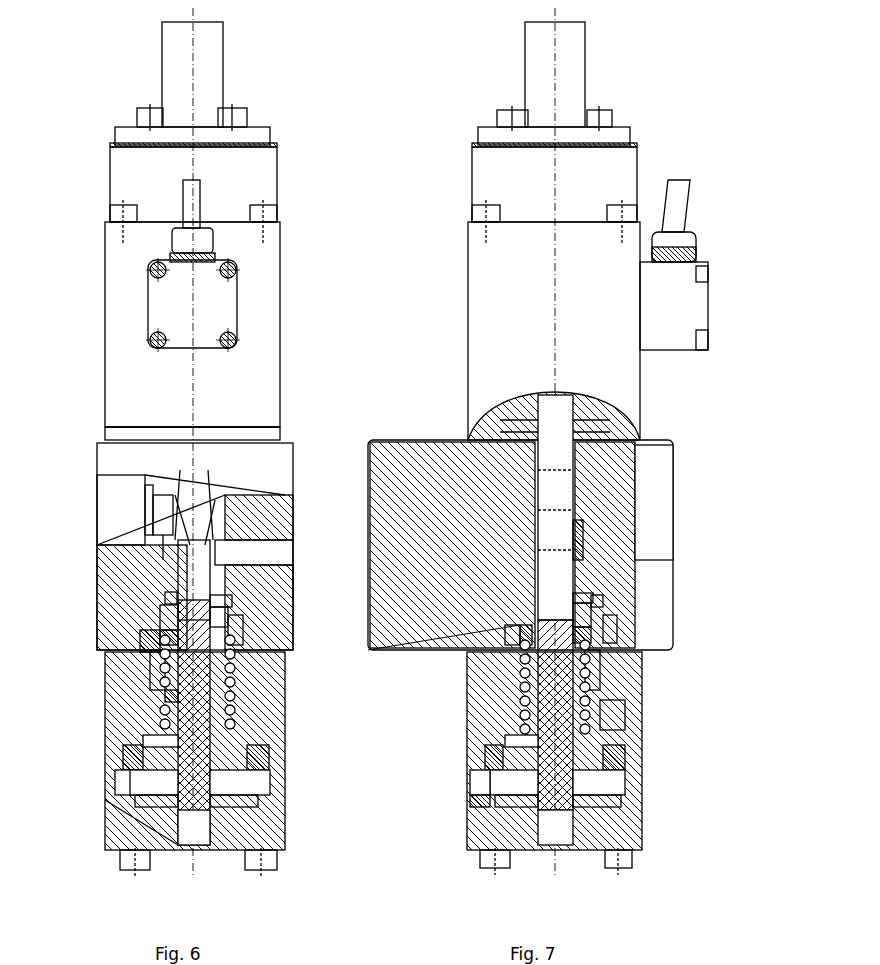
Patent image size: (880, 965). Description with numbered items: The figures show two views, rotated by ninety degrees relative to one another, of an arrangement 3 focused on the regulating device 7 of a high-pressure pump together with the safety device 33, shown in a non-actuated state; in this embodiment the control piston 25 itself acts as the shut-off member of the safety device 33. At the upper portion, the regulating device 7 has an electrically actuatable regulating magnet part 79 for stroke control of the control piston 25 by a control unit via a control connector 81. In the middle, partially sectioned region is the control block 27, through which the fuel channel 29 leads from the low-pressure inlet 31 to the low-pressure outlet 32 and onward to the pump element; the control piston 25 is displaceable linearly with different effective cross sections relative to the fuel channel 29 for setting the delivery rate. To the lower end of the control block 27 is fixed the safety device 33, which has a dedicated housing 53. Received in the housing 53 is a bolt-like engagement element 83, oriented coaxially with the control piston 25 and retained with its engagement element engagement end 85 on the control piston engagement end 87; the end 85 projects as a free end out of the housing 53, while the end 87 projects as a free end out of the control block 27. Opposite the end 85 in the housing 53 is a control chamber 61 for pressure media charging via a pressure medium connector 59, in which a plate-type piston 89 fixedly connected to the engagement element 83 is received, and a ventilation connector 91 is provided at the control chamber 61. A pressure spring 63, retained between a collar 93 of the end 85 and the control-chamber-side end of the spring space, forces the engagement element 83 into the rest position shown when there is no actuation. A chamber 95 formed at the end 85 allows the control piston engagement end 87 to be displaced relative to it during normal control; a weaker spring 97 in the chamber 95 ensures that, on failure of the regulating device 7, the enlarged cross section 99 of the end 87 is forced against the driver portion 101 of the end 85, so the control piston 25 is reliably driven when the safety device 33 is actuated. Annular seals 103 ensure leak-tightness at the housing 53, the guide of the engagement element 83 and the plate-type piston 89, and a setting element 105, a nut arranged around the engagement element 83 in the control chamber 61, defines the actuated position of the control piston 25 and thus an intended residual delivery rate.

In FIG. 6, the arrangement 3 is at (100, 347).
In FIG. 7, the arrangement 3 is at (510, 82).
In FIG. 6, the regulating device 7 is at (125, 462).
In FIG. 7, the regulating device 7 is at (455, 360).
In FIG. 6, the control piston 25 is at (198, 520).
In FIG. 7, the control piston 25 is at (555, 507).
In FIG. 6, the control block 27 is at (265, 460).
In FIG. 7, the control block 27 is at (655, 478).
In FIG. 6, the fuel channel 29 is at (150, 512).
In FIG. 7, the fuel channel 29 is at (572, 552).
In FIG. 6, the low-pressure inlet 31 is at (115, 500).
In FIG. 6, the low-pressure outlet 32 is at (292, 560).
In FIG. 6, the safety device 33 is at (250, 700).
In FIG. 7, the safety device 33 is at (480, 830).
In FIG. 6, the housing 53 is at (285, 680).
In FIG. 7, the housing 53 is at (590, 850).
In FIG. 7, the pressure medium connector 59 is at (625, 720).
In FIG. 6, the control chamber 61 is at (232, 778).
In FIG. 7, the control chamber 61 is at (600, 790).
In FIG. 6, the pressure spring 63 is at (165, 680).
In FIG. 7, the pressure spring 63 is at (620, 700).
In FIG. 6, the regulating magnet part 79 is at (278, 298).
In FIG. 7, the regulating magnet part 79 is at (598, 227).
In FIG. 6, the control connector 81 is at (188, 185).
In FIG. 7, the control connector 81 is at (684, 215).
In FIG. 6, the engagement element 83 is at (110, 845).
In FIG. 7, the engagement element 83 is at (480, 777).
In FIG. 6, the engagement element engagement end 85 is at (228, 610).
In FIG. 7, the engagement element engagement end 85 is at (510, 640).
In FIG. 6, the control piston engagement end 87 is at (150, 648).
In FIG. 7, the control piston engagement end 87 is at (590, 590).
In FIG. 6, the plate-type piston 89 is at (170, 700).
In FIG. 7, the plate-type piston 89 is at (628, 757).
In FIG. 7, the ventilation connector 91 is at (475, 800).
In FIG. 6, the collar 93 is at (162, 605).
In FIG. 7, the collar 93 is at (595, 612).
In FIG. 6, the chamber 95 is at (243, 620).
In FIG. 7, the chamber 95 is at (600, 640).
In FIG. 6, the spring 97 is at (170, 662).
In FIG. 7, the spring 97 is at (590, 657).
In FIG. 6, the enlarged cross section 99 is at (200, 596).
In FIG. 7, the enlarged cross section 99 is at (600, 620).
In FIG. 6, the driver portion 101 is at (215, 600).
In FIG. 7, the driver portion 101 is at (588, 600).
In FIG. 6, the seals 103 is at (165, 725).
In FIG. 7, the seals 103 is at (540, 725).
In FIG. 6, the setting element 105 is at (245, 800).
In FIG. 7, the setting element 105 is at (600, 777).